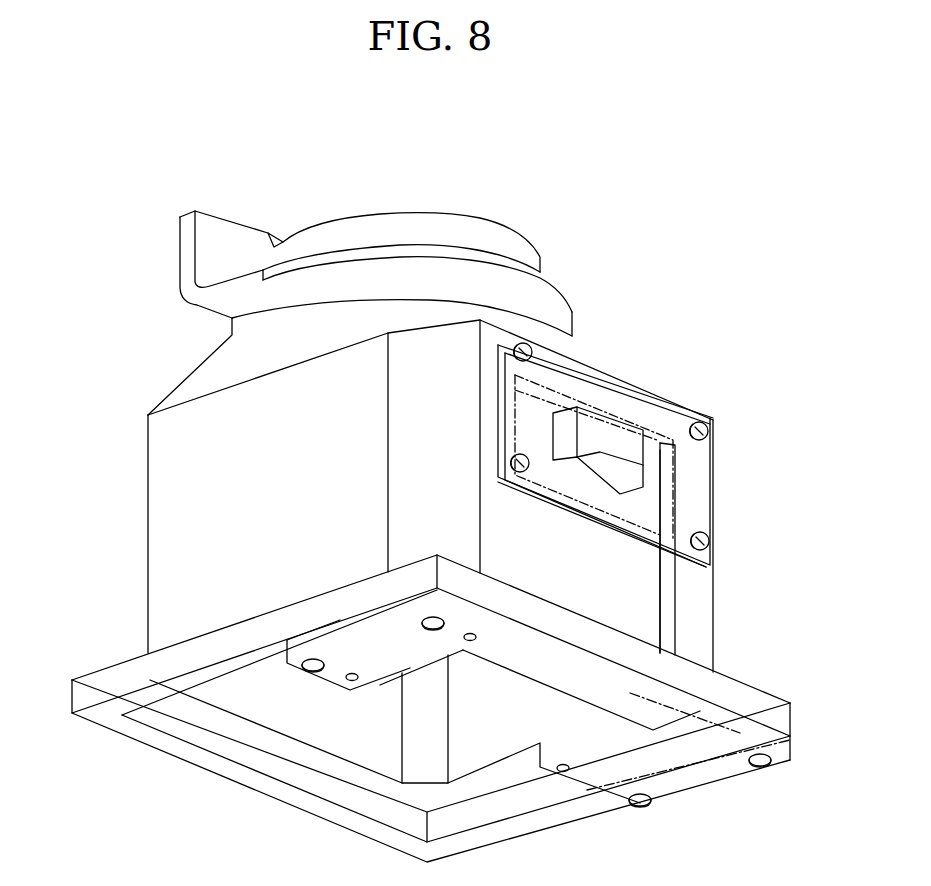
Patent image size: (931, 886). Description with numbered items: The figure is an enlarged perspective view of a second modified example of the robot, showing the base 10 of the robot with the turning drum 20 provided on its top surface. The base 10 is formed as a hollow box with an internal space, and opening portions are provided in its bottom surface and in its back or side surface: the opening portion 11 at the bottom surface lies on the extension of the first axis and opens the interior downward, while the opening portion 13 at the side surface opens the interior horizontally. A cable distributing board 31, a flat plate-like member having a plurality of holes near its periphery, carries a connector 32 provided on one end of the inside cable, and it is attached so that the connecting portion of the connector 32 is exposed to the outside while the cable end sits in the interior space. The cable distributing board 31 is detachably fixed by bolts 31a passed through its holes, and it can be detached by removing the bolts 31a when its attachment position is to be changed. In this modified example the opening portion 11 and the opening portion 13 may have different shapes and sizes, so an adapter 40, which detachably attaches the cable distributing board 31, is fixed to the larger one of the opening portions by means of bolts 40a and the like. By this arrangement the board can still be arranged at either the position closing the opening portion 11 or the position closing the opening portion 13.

The base 10 is at (148, 468).
The opening portion 11 is at (253, 756).
The opening portion 13 is at (668, 628).
The turning drum 20 is at (556, 264).
The cable distributing board 31 is at (697, 485).
The bolts 31a is at (513, 351).
The connector 32 is at (612, 440).
The adapter 40 is at (570, 788).
The bolts 40a is at (300, 670).